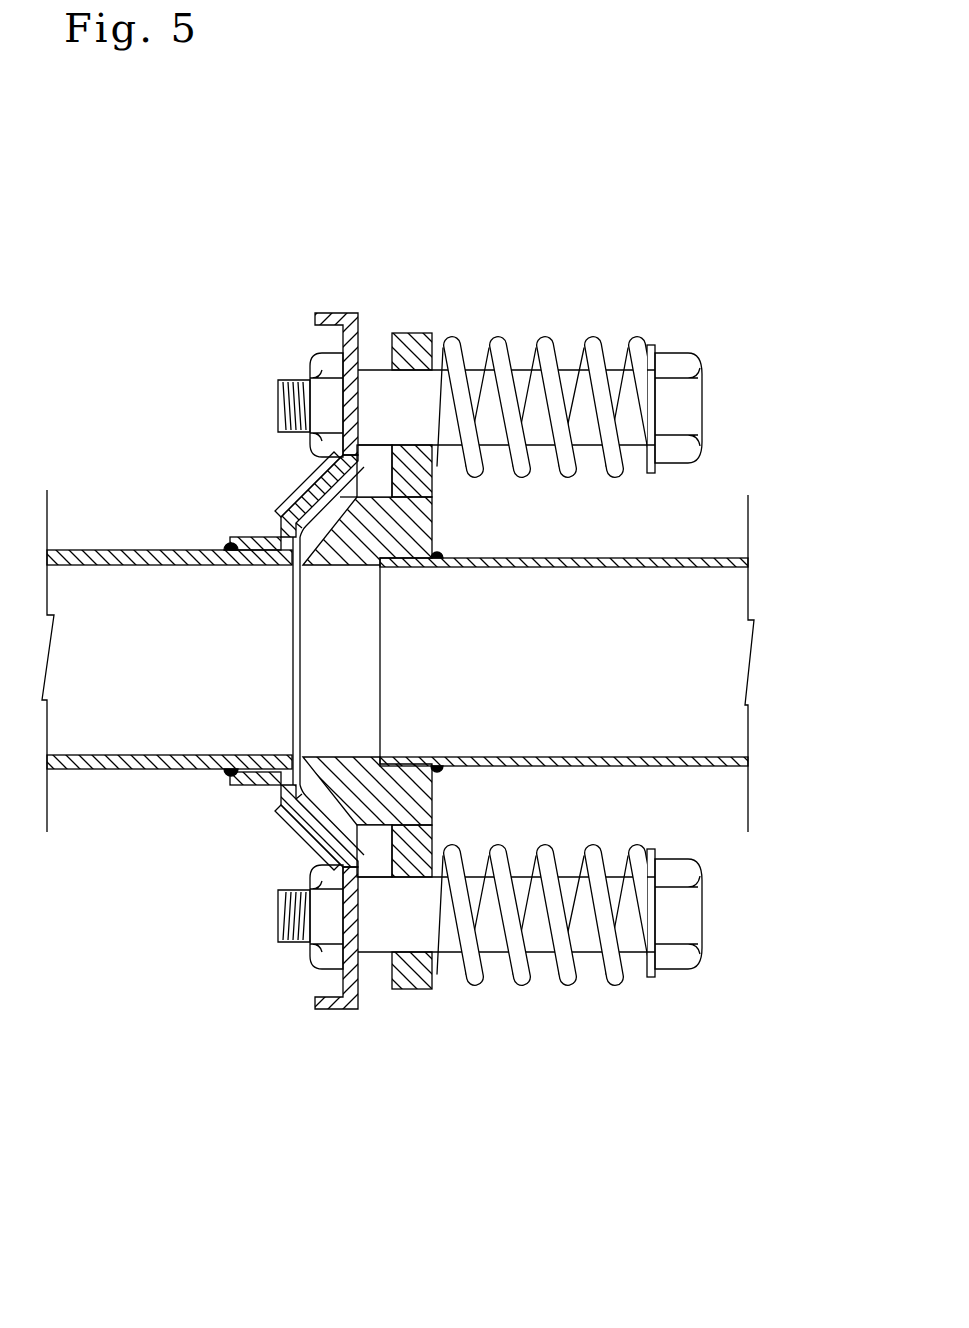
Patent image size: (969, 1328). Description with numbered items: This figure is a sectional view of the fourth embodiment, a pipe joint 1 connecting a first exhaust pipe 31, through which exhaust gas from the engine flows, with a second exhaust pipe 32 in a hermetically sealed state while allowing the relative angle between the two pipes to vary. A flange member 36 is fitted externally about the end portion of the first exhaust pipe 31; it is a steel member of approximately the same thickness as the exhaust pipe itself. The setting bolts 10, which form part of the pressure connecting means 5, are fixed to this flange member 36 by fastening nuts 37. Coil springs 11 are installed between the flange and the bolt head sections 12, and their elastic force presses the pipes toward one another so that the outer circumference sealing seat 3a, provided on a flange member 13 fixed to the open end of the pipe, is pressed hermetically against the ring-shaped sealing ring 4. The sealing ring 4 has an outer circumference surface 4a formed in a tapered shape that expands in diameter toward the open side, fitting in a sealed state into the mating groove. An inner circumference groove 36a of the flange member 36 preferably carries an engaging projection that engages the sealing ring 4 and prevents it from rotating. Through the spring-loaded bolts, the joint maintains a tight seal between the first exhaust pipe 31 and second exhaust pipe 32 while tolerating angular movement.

The pipe joint 1 is at (286, 283).
The first exhaust pipe 31 is at (97, 536).
The second exhaust pipe 32 is at (691, 546).
The outer circumference sealing seat 3a is at (393, 489).
The ring-shaped sealing ring 4 is at (290, 510).
The outer circumference surface 4a is at (345, 497).
The pressure connecting means 5 is at (480, 288).
The setting bolts 10 is at (680, 338).
The coil springs 11 is at (545, 335).
The bolt head sections 12 is at (700, 362).
The flange member 13 is at (430, 318).
The flange member 36 is at (346, 302).
The inner circumference groove 36a is at (345, 550).
The fastening nuts 37 is at (318, 368).